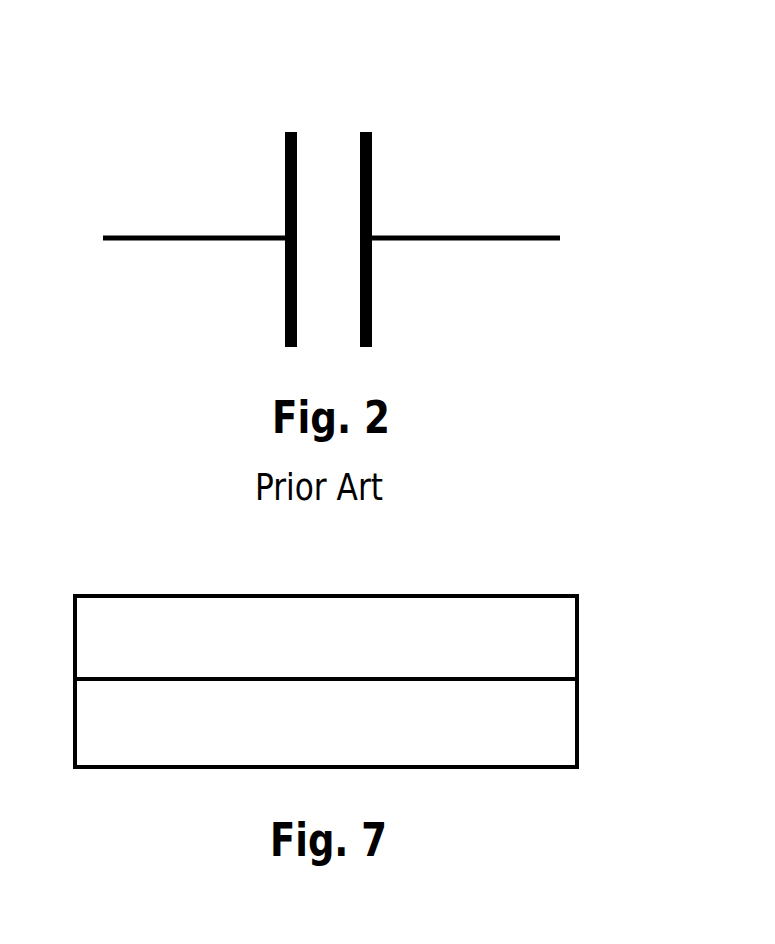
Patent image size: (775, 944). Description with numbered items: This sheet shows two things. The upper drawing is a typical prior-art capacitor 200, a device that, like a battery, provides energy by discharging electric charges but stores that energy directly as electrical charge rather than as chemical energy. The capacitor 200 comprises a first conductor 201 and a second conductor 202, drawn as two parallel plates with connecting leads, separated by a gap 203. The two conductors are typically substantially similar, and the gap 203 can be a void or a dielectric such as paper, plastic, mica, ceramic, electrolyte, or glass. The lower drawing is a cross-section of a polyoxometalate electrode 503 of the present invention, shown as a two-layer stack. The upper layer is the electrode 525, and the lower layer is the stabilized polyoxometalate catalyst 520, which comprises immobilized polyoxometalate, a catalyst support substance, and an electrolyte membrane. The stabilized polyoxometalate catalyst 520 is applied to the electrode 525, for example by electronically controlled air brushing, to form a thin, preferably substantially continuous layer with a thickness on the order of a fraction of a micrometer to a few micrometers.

In FIG. 2, the capacitor 200 is at (373, 107).
In FIG. 2, the first conductor 201 is at (372, 150).
In FIG. 2, the second conductor 202 is at (287, 185).
In FIG. 2, the gap 203 is at (320, 140).
In FIG. 7, the layered structure 503 is at (543, 570).
In FIG. 7, the electrode 525 is at (577, 617).
In FIG. 7, the stabilized polyoxometalate catalyst 520 is at (577, 715).